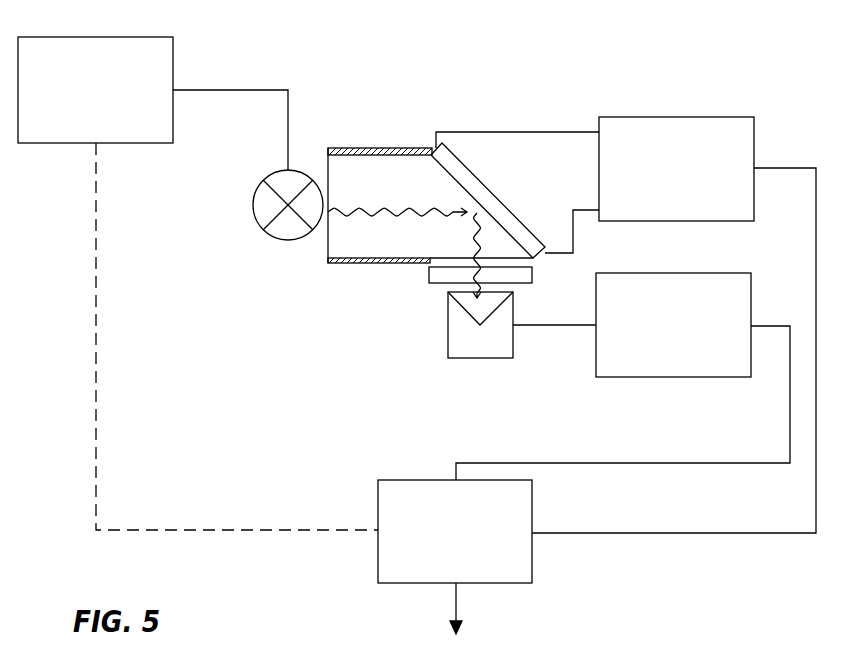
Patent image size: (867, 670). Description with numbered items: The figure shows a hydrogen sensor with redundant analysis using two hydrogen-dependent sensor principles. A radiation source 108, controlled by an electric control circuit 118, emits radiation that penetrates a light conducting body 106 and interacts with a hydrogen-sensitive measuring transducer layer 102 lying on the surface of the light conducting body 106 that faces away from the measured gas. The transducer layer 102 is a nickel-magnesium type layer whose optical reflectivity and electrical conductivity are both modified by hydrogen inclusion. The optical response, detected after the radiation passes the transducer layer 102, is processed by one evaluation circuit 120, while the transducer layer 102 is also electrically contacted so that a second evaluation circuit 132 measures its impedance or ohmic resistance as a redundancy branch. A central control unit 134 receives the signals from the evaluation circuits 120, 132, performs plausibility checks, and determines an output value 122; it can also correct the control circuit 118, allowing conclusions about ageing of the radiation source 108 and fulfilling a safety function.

The measuring transducer layer 102 is at (457, 168).
The light conducting body 106 is at (396, 243).
The radiation source 108 is at (255, 198).
The electric control circuit 118 is at (157, 132).
The evaluation circuit 120 is at (734, 362).
The output value 122 is at (456, 608).
The evaluation circuit 132 is at (734, 206).
The central control unit 134 is at (505, 557).